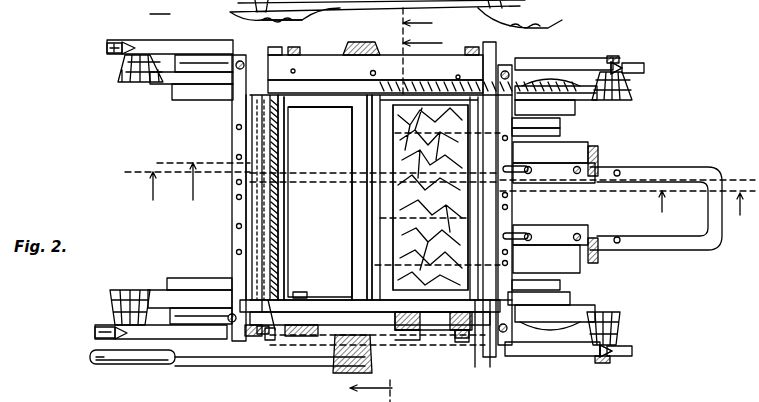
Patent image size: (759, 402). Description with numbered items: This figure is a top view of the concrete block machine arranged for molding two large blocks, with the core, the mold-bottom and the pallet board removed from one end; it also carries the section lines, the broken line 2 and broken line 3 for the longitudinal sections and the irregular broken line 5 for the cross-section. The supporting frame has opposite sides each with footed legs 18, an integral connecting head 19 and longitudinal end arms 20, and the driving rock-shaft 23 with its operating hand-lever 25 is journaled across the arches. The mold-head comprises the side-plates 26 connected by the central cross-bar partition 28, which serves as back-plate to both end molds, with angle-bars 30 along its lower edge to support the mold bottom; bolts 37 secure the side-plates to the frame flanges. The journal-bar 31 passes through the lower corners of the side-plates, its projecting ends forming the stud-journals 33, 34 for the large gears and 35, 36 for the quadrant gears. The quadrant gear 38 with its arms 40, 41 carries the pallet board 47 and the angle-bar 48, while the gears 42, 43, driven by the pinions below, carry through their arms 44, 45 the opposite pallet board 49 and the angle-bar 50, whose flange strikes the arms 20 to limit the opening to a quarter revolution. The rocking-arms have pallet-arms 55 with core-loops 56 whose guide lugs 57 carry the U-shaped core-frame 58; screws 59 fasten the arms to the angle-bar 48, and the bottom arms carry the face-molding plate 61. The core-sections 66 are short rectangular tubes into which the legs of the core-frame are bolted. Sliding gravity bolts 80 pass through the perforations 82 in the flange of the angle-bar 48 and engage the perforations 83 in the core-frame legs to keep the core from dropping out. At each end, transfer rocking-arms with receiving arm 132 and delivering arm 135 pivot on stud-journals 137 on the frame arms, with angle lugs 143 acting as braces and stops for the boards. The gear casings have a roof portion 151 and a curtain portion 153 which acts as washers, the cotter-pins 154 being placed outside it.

The broken line 2 is at (312, 172).
The broken line 3 is at (306, 193).
The irregular broken line 5 is at (404, 70).
The footed leg 18 is at (292, 19).
The connecting head 19 is at (322, 290).
The longitudinal end arm 20 is at (236, 12).
The driving rock-shaft 23 is at (353, 42).
The operating hand-lever 25 is at (130, 359).
The side-plate 26 is at (322, 90).
The central cross-bar partition 28 is at (372, 127).
The angle-bar 30 is at (356, 222).
The journal-bar 31 is at (288, 197).
The stud-journal 33 is at (268, 334).
The stud-journal 34 is at (286, 42).
The stud-journal 35 is at (462, 343).
The stud-journal 36 is at (475, 58).
The bolt 37 is at (296, 292).
The quadrant gear 38 is at (408, 328).
The arm 40 is at (492, 337).
The arm 41 is at (503, 64).
The gear 42 is at (192, 315).
The gear 43 is at (207, 62).
The arm 44 is at (243, 328).
The arm 45 is at (249, 52).
The pallet board 47 is at (480, 200).
The angle-bar 48 is at (512, 125).
The pallet board 49 is at (159, 7).
The angle-bar 50 is at (234, 118).
The pallet-arm 55 is at (500, 150).
The core-loop 56 is at (554, 207).
The guide lug 57 is at (584, 242).
The U-shaped core-frame 58 is at (692, 251).
The screw 59 is at (515, 152).
The face-molding plate 61 is at (439, 197).
The core-section 66 is at (598, 173).
The sliding gravity bolt 80 is at (522, 234).
The perforation 82 is at (236, 251).
The perforation 83 is at (619, 237).
The receiving arm 132 is at (153, 47).
The delivering arm 135 is at (107, 48).
The stud-journal 137 is at (612, 56).
The angle lug 143 is at (622, 62).
The roof portion 151 is at (368, 66).
The curtain portion 153 is at (406, 342).
The cotter-pin 154 is at (453, 390).